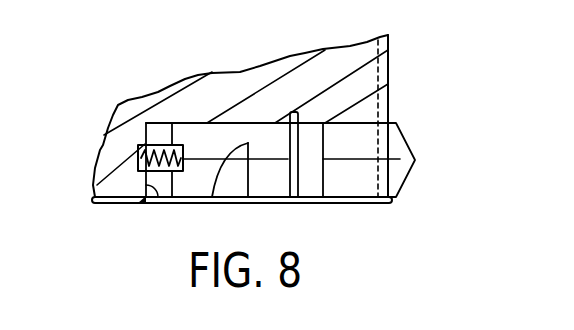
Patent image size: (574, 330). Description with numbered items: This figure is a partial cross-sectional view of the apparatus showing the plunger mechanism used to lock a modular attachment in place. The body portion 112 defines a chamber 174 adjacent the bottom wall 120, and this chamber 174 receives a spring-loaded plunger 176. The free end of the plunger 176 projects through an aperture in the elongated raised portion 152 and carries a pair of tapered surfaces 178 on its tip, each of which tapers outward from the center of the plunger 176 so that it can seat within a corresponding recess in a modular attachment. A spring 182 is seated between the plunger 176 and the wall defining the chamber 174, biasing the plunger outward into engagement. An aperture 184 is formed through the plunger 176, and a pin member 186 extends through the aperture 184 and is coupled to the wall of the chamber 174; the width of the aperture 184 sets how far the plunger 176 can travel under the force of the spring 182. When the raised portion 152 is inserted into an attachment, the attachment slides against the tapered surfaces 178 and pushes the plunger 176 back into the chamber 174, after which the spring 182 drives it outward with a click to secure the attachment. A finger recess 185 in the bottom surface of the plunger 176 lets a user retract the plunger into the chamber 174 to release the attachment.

The body portion 112 is at (212, 87).
The bottom wall 120 is at (118, 204).
The elongated raised portion 152 is at (390, 83).
The chamber 174 is at (157, 197).
The spring-loaded plunger 176 is at (263, 133).
The tapered surfaces 178 is at (408, 142).
The spring 182 is at (168, 143).
The aperture 184 is at (320, 168).
The finger recess 185 is at (213, 197).
The pin member 186 is at (300, 168).